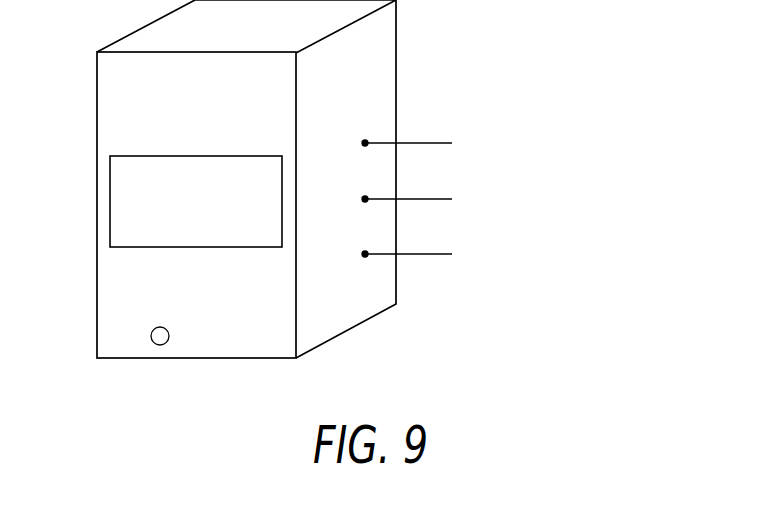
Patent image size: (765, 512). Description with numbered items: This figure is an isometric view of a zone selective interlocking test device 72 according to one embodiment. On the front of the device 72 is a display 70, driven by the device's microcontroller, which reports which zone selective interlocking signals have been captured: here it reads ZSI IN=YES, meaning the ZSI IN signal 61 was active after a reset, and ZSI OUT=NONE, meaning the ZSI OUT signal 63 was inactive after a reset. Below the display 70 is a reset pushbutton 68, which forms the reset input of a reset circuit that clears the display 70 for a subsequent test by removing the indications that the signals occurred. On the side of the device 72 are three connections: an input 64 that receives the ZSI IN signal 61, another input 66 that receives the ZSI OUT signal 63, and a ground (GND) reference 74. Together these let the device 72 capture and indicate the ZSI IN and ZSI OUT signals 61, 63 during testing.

The device 72 is at (481, 68).
The display 70 is at (110, 200).
The reset pushbutton 68 is at (160, 345).
The input 64 is at (362, 142).
The ZSI IN signal 61 is at (594, 139).
The input 66 is at (362, 198).
The ZSI OUT signal 63 is at (614, 194).
The ground reference 74 is at (362, 253).